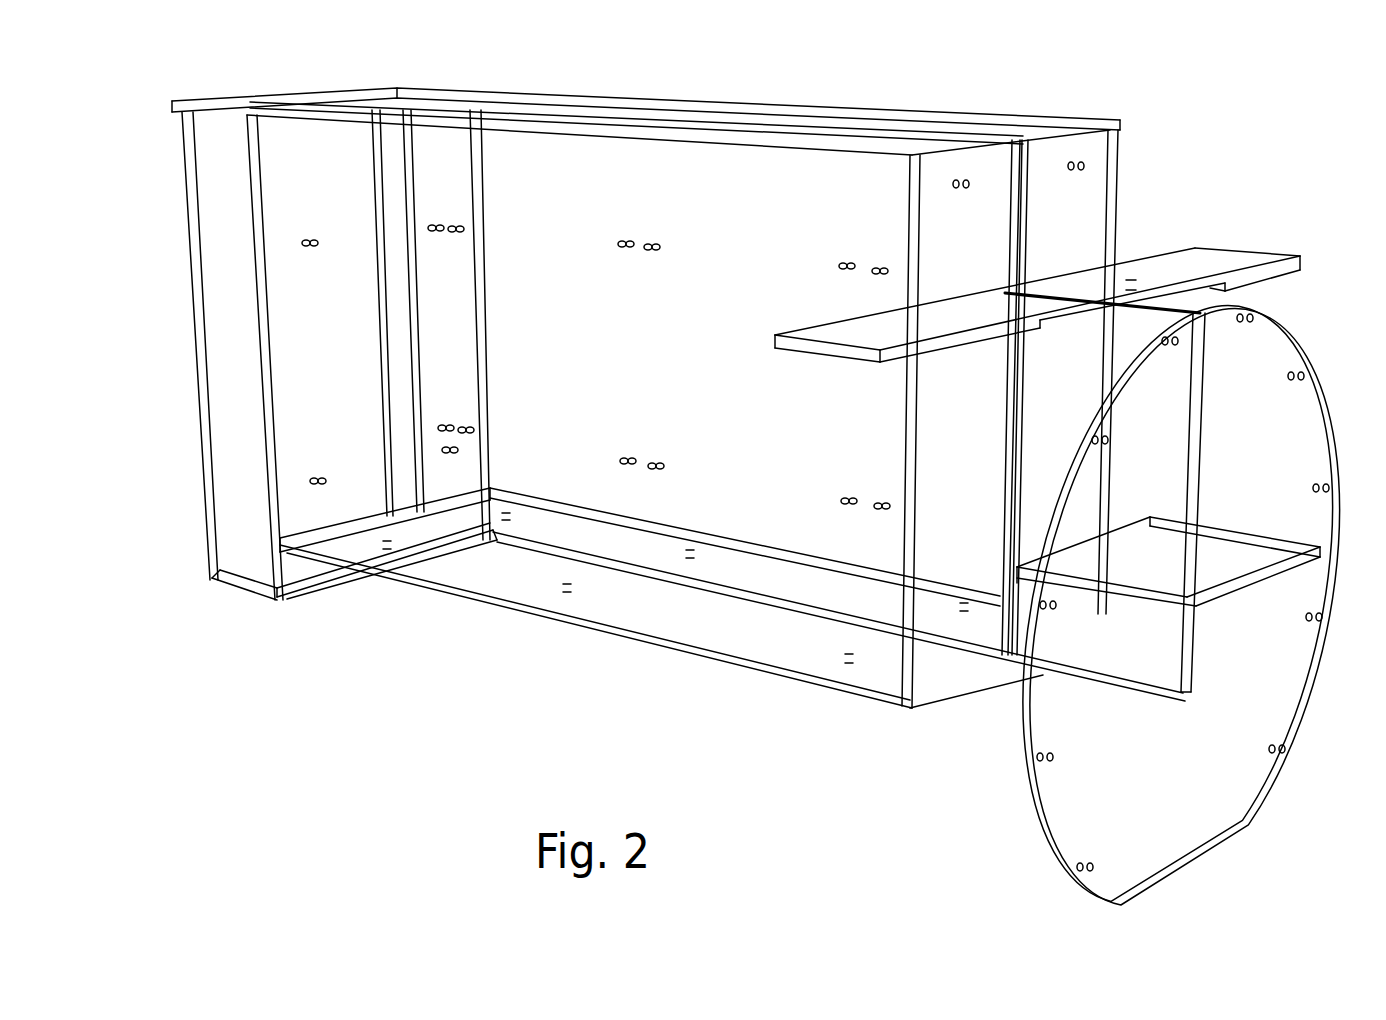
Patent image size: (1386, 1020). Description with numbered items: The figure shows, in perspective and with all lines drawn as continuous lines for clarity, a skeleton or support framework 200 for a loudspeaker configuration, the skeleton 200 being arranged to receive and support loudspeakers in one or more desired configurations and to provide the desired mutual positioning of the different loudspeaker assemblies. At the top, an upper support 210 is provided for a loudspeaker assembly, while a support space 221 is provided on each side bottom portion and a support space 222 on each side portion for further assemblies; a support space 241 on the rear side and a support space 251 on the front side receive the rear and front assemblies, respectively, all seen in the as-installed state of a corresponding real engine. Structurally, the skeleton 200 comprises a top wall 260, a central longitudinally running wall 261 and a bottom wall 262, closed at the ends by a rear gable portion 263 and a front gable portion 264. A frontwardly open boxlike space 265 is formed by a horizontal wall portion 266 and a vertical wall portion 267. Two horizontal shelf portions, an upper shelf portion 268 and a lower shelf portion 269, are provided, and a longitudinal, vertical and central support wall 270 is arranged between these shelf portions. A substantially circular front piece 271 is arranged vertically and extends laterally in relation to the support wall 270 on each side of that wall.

The skeleton 200 is at (315, 670).
The upper support 210 is at (880, 120).
The support space 221 is at (385, 590).
The support space 222 is at (753, 512).
The support space 241 is at (946, 266).
The support space 251 is at (227, 353).
The top wall 260 is at (1098, 127).
The central longitudinally running wall 261 is at (665, 577).
The bottom wall 262 is at (560, 620).
The rear gable portion 263 is at (1113, 207).
The front gable portion 264 is at (267, 477).
The frontwardly open boxlike space 265 is at (227, 240).
The horizontal wall portion 266 is at (243, 578).
The vertical wall portion 267 is at (188, 144).
The upper shelf portion 268 is at (1248, 256).
The lower shelf portion 269 is at (1003, 680).
The support wall 270 is at (1200, 395).
The circular front piece 271 is at (1077, 808).